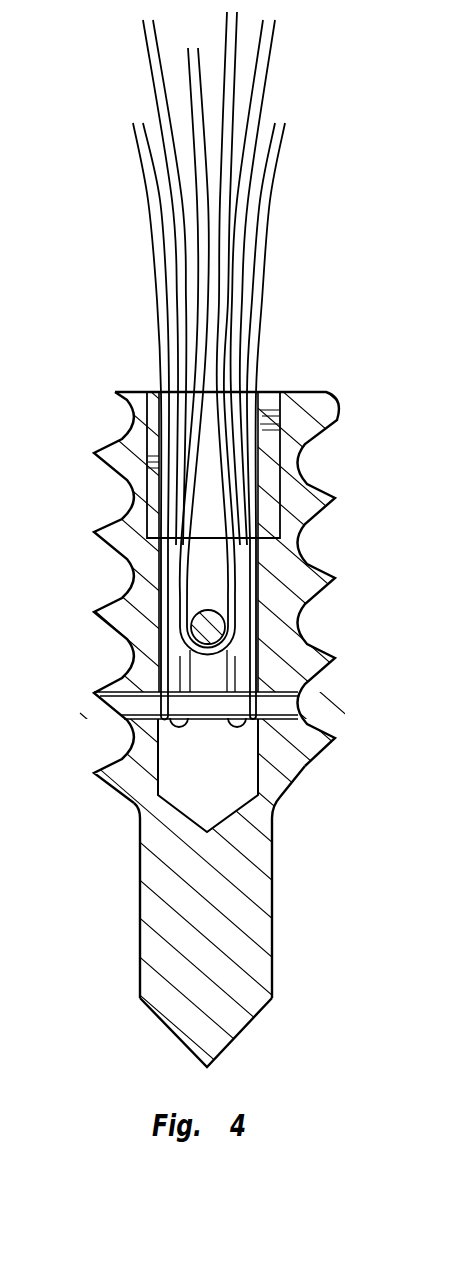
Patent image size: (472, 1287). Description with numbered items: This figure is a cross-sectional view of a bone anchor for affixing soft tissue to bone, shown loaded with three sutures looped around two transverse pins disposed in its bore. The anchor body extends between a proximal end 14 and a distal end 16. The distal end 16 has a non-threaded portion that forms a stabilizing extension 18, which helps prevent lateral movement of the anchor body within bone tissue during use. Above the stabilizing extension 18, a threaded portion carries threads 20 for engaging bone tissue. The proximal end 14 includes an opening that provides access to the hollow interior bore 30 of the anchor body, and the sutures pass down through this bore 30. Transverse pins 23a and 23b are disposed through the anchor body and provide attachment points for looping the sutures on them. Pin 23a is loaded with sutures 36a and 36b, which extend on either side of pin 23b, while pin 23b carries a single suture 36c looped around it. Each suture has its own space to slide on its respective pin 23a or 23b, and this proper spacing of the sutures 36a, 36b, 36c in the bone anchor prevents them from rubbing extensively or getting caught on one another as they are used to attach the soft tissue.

The proximal end 14 is at (298, 396).
The distal end 16 is at (209, 1068).
The stabilizing extension 18 is at (138, 905).
The threads 20 is at (92, 535).
The transverse pin 23a is at (293, 706).
The transverse pin 23b is at (225, 633).
The bore 30 is at (208, 423).
The suture 36a is at (168, 733).
The suture 36b is at (246, 738).
The suture 36c is at (190, 598).